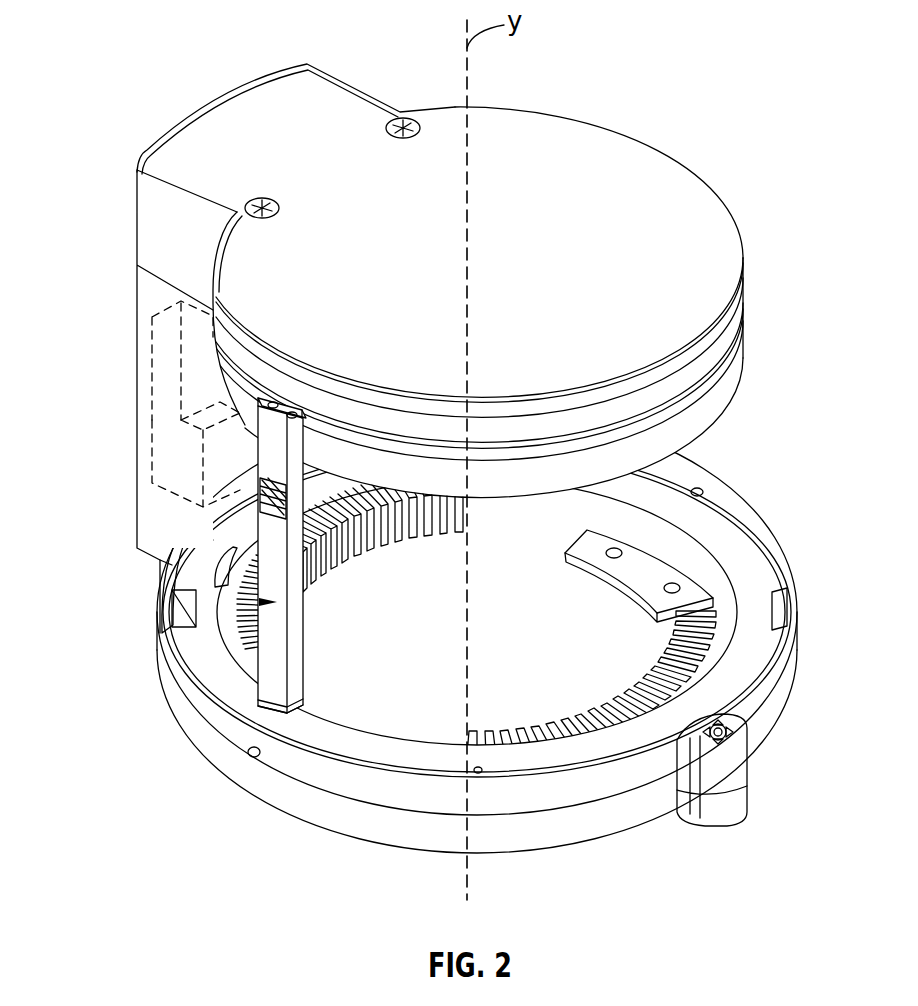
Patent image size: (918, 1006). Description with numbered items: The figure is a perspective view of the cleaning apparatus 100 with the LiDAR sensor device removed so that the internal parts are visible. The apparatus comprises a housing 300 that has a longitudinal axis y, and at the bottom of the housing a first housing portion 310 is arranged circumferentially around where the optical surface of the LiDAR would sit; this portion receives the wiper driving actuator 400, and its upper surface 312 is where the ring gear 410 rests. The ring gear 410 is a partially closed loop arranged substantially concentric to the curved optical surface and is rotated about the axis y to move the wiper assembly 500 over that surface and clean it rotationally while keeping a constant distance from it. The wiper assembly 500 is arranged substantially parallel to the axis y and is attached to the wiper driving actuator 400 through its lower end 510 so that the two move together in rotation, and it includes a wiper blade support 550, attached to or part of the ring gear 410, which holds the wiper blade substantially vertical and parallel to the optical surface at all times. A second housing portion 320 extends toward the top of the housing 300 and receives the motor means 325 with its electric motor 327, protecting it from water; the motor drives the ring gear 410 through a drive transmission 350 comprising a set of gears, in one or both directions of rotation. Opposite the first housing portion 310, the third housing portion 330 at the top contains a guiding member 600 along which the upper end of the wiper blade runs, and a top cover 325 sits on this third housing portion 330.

The cleaning apparatus 100 is at (252, 345).
The housing 300 is at (437, 292).
The first housing portion 310 is at (796, 655).
The upper surface 312 is at (393, 706).
The second housing portion 320 is at (137, 292).
The motor means 325 is at (687, 187).
The electric motor 327 is at (150, 352).
The third housing portion 330 is at (733, 367).
The drive transmission 350 is at (150, 470).
The wiper driving actuator 400 is at (705, 642).
The ring gear 410 is at (550, 725).
The wiper assembly 500 is at (181, 581).
The lower end 510 is at (272, 683).
The wiper blade support 550 is at (280, 462).
The guiding member 600 is at (748, 322).